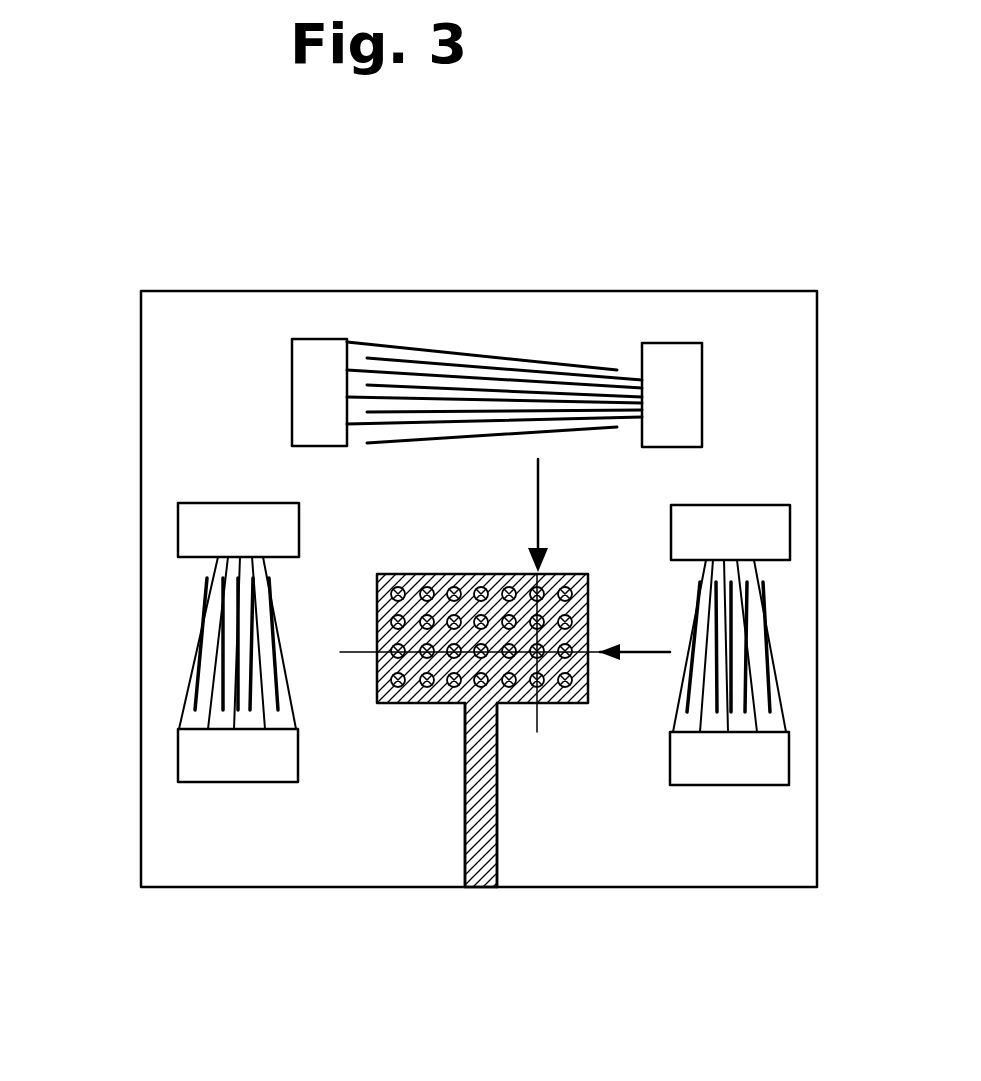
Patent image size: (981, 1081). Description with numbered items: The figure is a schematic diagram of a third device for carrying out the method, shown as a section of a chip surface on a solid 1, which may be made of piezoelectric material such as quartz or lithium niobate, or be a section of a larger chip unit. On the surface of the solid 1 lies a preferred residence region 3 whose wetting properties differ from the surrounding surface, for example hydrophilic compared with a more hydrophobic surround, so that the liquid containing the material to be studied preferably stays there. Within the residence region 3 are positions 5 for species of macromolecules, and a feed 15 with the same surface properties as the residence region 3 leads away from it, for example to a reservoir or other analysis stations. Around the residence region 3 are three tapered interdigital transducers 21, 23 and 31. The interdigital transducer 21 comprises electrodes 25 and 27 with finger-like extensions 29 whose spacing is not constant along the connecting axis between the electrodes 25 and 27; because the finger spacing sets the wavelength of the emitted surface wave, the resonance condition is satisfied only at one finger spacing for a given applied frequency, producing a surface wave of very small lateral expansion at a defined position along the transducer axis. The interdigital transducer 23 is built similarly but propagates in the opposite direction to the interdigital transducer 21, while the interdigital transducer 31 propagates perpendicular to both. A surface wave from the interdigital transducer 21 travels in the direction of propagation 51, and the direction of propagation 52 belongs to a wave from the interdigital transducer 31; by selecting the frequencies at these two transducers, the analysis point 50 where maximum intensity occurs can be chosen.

The solid 1 is at (165, 401).
The preferred residence region 3 is at (469, 721).
The position for a species of macromolecules 5 is at (475, 578).
The feed 15 is at (473, 837).
The interdigital transducer 21 is at (793, 646).
The interdigital transducer 23 is at (193, 638).
The electrode 25 is at (773, 767).
The electrode 27 is at (767, 510).
The finger-like extensions 29 is at (780, 695).
The interdigital transducer 31 is at (495, 341).
The analysis point 50 is at (537, 658).
The direction of propagation 51 is at (635, 654).
The direction of propagation 52 is at (538, 500).